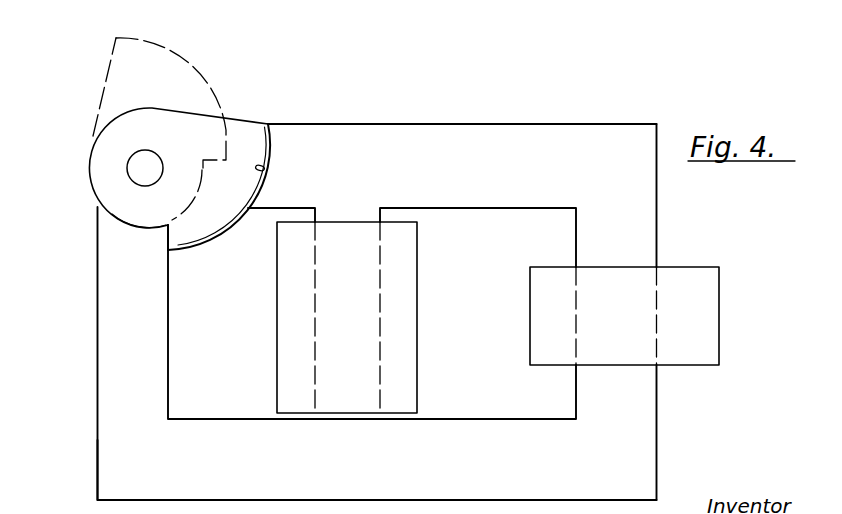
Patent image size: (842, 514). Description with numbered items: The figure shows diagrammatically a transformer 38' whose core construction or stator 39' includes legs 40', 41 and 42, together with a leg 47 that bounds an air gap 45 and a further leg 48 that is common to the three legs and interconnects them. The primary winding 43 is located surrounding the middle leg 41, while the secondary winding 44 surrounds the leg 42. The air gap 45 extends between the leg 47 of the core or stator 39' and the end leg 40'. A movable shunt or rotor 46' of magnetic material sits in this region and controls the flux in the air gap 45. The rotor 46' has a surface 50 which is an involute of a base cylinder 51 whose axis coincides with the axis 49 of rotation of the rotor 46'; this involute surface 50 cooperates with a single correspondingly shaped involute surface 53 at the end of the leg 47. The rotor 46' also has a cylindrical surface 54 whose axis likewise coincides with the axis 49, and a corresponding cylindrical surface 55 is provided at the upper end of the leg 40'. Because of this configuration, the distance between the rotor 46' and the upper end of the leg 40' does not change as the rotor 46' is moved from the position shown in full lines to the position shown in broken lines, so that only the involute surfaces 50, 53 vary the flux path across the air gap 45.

The transformer 38' is at (100, 470).
The core or stator 39' is at (508, 91).
The end leg 40' is at (354, 353).
The middle leg 41 is at (380, 212).
The leg 42 is at (647, 247).
The primary winding 43 is at (408, 388).
The secondary winding 44 is at (708, 312).
The air gap 45 is at (268, 124).
The movable shunt or rotor 46' is at (165, 129).
The leg 47 is at (335, 147).
The leg 48 is at (346, 492).
The axis of rotation 49 is at (145, 168).
The involute surface 50 is at (227, 232).
The base cylinder 51 is at (158, 175).
The involute surface 53 is at (265, 168).
The cylindrical surface 54 is at (88, 174).
The cylindrical surface 55 is at (121, 219).